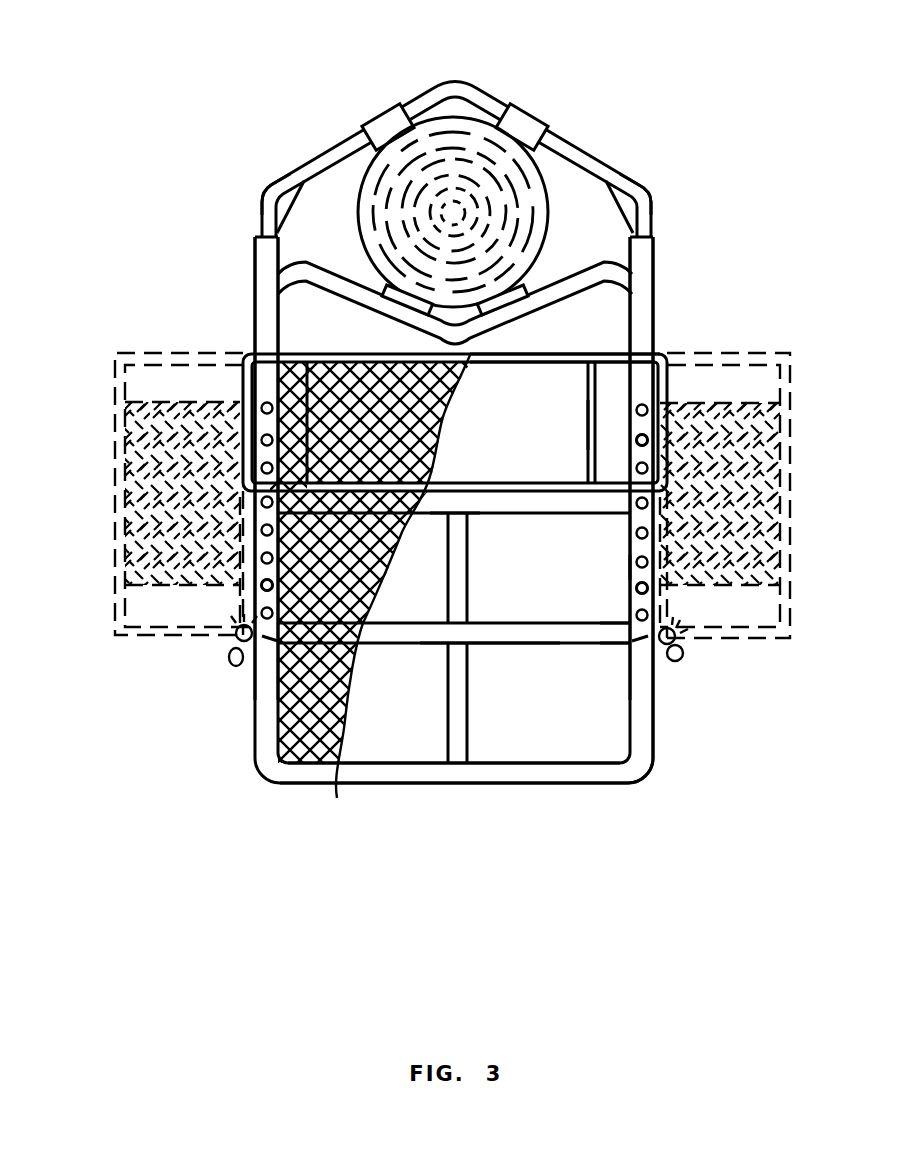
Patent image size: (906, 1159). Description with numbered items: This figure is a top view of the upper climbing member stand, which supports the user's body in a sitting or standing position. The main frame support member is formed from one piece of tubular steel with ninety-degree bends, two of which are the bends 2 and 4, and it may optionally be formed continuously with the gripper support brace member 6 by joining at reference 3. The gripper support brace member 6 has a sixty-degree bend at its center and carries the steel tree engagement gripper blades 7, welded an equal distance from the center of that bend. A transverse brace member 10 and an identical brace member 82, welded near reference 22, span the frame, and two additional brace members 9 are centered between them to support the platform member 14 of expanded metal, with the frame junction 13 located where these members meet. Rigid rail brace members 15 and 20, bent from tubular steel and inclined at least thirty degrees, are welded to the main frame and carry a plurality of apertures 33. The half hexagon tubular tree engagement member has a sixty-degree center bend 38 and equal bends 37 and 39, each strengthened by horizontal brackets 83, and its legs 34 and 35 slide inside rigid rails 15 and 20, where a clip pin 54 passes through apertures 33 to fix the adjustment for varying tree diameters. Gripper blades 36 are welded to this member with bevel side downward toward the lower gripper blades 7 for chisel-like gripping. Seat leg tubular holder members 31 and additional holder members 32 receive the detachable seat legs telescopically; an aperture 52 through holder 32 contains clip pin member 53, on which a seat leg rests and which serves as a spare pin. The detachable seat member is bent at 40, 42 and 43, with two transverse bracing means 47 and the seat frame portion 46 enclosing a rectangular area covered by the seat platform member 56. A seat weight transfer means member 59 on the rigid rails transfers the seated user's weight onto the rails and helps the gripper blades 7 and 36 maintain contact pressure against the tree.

The bend 2 is at (260, 780).
The joint reference 3 is at (456, 778).
The bend 4 is at (640, 783).
The gripper support brace member 6 is at (612, 271).
The tree engagement gripper blades 7 is at (402, 295).
The brace members 9 is at (467, 541).
The transverse brace member 10 is at (581, 505).
The cross bar junction 13 is at (446, 517).
The platform member 14 is at (344, 588).
The rigid rail brace member 15 is at (282, 641).
The rigid rail brace member 20 is at (630, 568).
The weld reference 22 is at (631, 645).
The seat leg tubular holder members 31 is at (243, 352).
The seat leg tubular holder members 32 is at (282, 642).
The apertures 33 is at (252, 586).
The tree engagement member leg 34 is at (253, 259).
The tree engagement member leg 35 is at (656, 259).
The tree engagement gripper blades 36 is at (384, 116).
The bend 37 is at (644, 180).
The center bend 38 is at (487, 83).
The bend 39 is at (260, 192).
The bend 40 is at (308, 356).
The bend 42 is at (582, 479).
The bend 43 is at (588, 356).
The frame top bar section 46 is at (535, 358).
The transverse bracing means 47 is at (582, 424).
The aperture 52 is at (237, 630).
The clip pin member 53 is at (232, 667).
The clip pin 54 is at (250, 573).
The seat platform member 56 is at (438, 425).
The seat weight transfer means member 59 is at (653, 434).
The brace member 82 is at (487, 634).
The horizontal brackets 83 is at (289, 210).